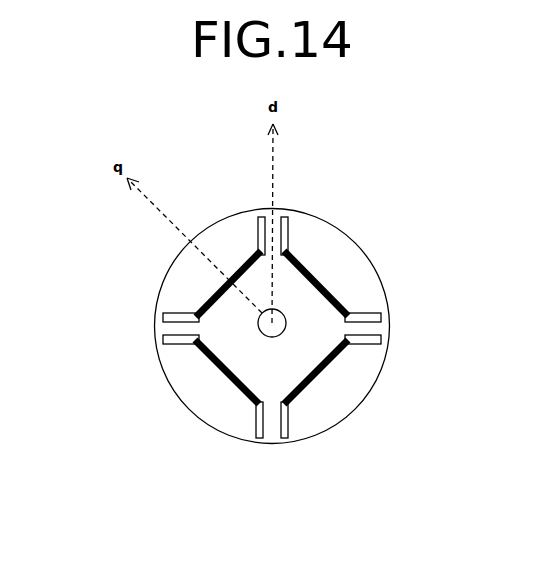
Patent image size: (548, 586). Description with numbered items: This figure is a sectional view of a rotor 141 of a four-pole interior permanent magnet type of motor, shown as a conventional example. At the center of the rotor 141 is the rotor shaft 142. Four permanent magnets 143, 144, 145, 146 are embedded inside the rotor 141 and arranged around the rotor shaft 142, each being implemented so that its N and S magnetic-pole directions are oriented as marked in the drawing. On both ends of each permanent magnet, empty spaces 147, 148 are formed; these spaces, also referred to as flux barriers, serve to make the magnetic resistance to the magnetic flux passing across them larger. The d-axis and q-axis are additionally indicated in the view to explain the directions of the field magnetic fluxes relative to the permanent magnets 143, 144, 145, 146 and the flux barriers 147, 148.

The rotor 141 is at (167, 270).
The rotor shaft 142 is at (287, 321).
The permanent magnet 143 is at (293, 258).
The permanent magnet 144 is at (240, 258).
The permanent magnet 145 is at (251, 398).
The permanent magnet 146 is at (300, 385).
The flux barrier 147 is at (289, 215).
The flux barrier 148 is at (262, 216).